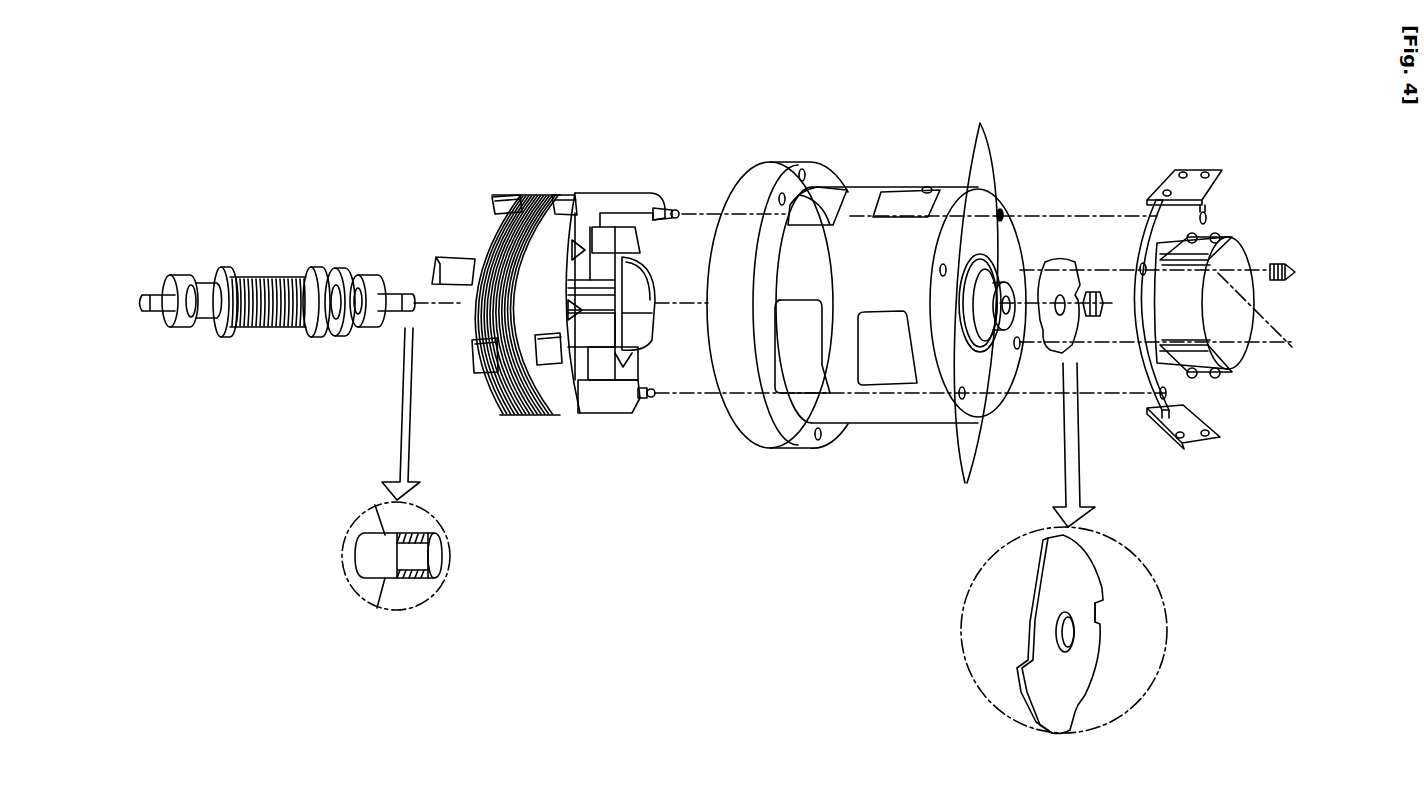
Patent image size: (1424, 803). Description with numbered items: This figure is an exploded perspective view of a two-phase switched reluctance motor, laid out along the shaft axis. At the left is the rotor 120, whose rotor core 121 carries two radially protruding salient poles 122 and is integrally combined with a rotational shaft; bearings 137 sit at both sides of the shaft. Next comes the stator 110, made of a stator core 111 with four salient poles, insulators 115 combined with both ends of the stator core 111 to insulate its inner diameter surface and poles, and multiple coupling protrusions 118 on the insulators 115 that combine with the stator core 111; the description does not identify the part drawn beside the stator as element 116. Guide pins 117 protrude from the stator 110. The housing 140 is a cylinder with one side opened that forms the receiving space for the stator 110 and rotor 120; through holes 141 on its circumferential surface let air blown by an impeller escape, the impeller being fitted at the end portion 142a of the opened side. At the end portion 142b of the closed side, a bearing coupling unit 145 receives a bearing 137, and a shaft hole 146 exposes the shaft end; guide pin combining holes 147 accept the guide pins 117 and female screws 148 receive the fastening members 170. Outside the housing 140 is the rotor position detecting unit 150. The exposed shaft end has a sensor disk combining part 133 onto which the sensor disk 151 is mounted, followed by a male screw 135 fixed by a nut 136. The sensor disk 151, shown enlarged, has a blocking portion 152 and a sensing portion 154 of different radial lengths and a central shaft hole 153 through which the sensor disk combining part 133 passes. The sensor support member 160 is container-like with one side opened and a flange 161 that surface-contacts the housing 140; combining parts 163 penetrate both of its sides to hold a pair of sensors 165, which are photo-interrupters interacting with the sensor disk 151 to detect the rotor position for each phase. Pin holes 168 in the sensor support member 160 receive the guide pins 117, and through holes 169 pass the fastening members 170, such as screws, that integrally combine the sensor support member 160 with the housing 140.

The stator 110 is at (543, 95).
The stator core 111 is at (580, 196).
The insulators 115 is at (604, 240).
The terminal pin 116 is at (640, 197).
The guide pins 117 is at (677, 210).
The coupling protrusions 118 is at (558, 193).
The rotor 120 is at (382, 184).
The rotor core 121 is at (290, 281).
The salient poles 122 is at (268, 283).
The sensor disk combining part 133 is at (417, 565).
The male screw 135 is at (403, 580).
The nut 136 is at (1095, 290).
The bearings 137 is at (183, 283).
The housing 140 is at (873, 184).
The through holes 141 is at (921, 188).
The end portion of the opened side 142a is at (728, 426).
The end portion of the closed side 142b is at (1002, 402).
The bearing coupling unit 145 is at (1012, 268).
The shaft hole 146 is at (1020, 262).
The guide pin combining holes 147 is at (976, 290).
The female screws 148 is at (962, 460).
The rotor position detecting unit 150 is at (1258, 468).
The sensor disk 151 is at (1026, 613).
The blocking portion 152 is at (1087, 568).
The shaft hole 153 is at (1077, 640).
The sensing portion 154 is at (1097, 622).
The sensor support member 160 is at (1246, 240).
The flange 161 is at (1192, 393).
The combining parts 163 is at (1215, 236).
The sensors 165 is at (1203, 164).
The pin holes 168 is at (1200, 198).
The through holes 169 is at (1137, 240).
The fastening members 170 is at (1292, 266).